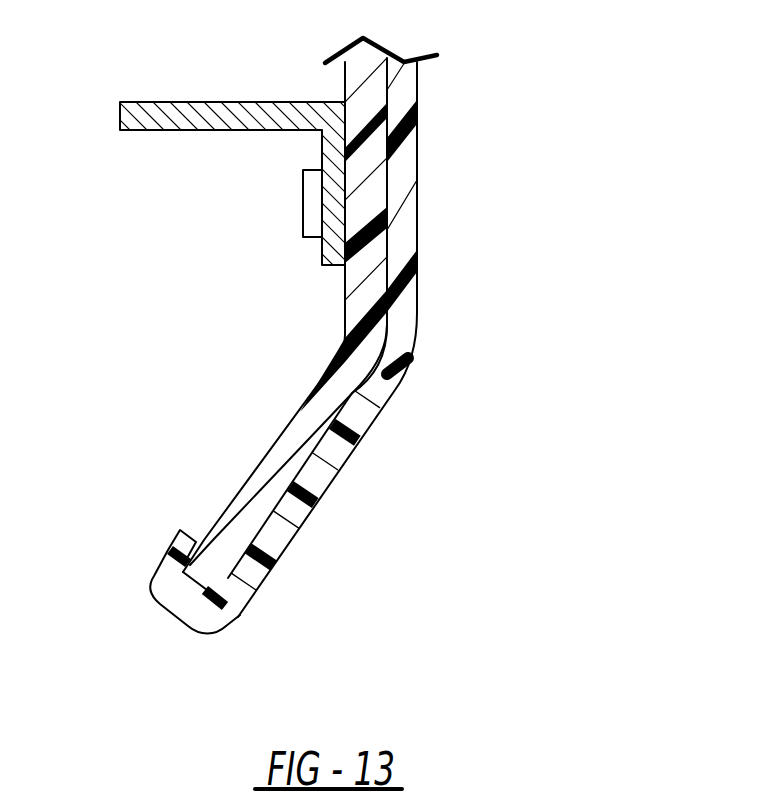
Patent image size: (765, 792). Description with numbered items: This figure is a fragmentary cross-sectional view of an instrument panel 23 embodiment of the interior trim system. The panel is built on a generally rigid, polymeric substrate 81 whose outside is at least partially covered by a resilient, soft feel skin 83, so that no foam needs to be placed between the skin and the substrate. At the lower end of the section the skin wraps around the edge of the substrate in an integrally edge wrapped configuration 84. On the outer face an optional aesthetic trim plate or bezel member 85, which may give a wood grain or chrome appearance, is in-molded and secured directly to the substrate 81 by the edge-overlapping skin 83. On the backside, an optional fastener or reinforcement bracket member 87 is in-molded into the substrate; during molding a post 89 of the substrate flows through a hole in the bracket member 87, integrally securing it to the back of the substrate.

The instrument panel 23 is at (526, 238).
The polymeric substrate 81 is at (292, 438).
The skin 83 is at (303, 507).
The integrally edge wrapped configuration 84 is at (177, 598).
The trim plate or bezel member 85 is at (412, 172).
The fastener or reinforcement bracket member 87 is at (198, 112).
The post 89 is at (313, 190).